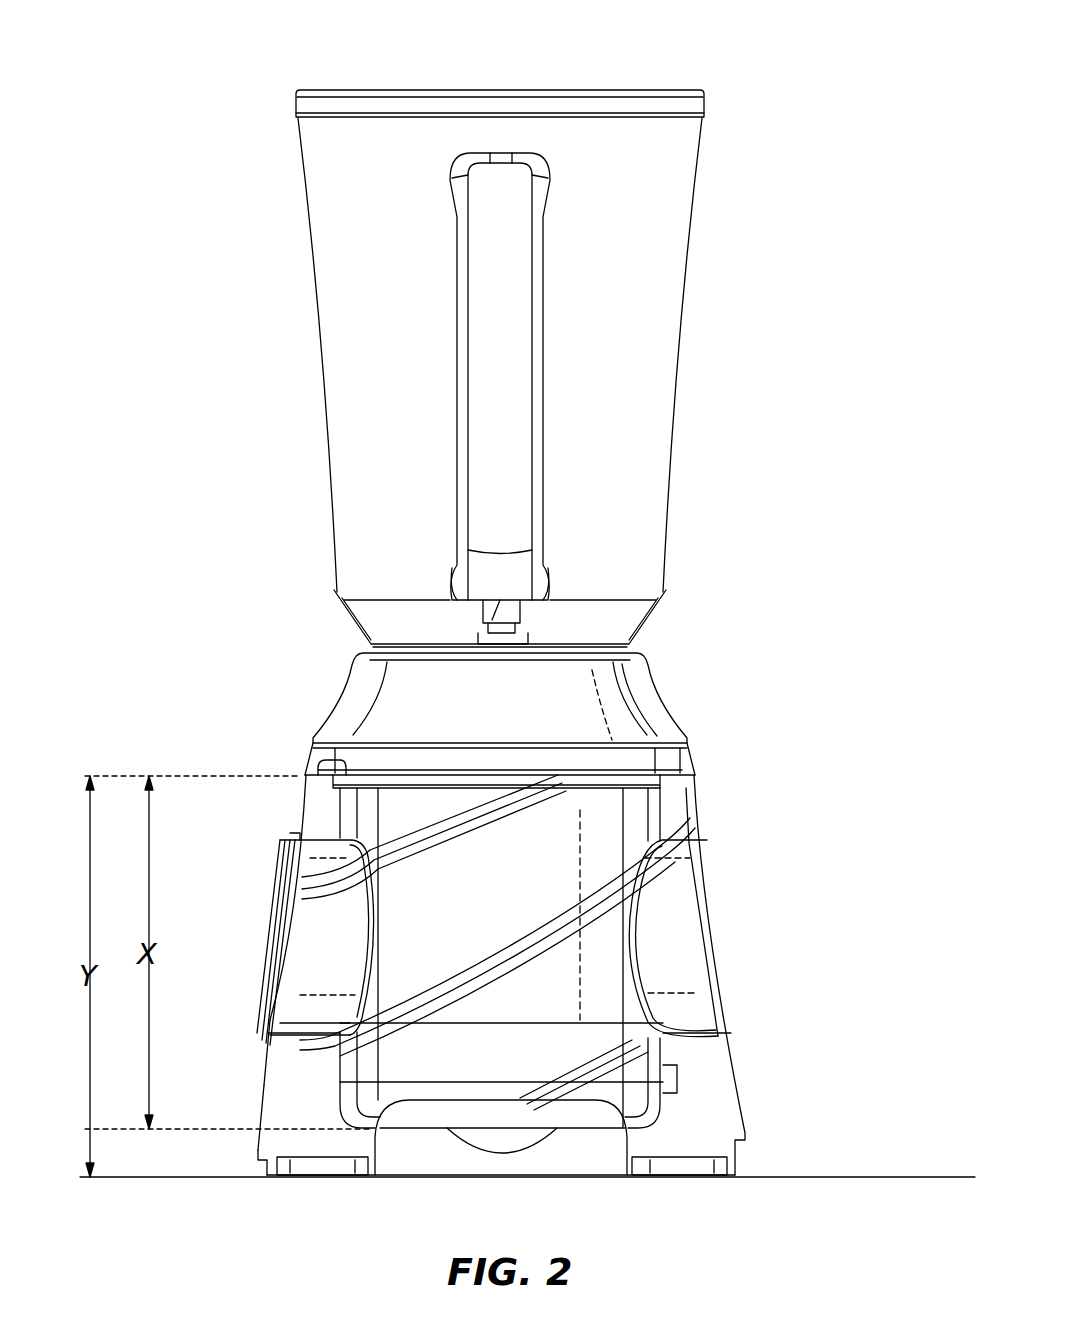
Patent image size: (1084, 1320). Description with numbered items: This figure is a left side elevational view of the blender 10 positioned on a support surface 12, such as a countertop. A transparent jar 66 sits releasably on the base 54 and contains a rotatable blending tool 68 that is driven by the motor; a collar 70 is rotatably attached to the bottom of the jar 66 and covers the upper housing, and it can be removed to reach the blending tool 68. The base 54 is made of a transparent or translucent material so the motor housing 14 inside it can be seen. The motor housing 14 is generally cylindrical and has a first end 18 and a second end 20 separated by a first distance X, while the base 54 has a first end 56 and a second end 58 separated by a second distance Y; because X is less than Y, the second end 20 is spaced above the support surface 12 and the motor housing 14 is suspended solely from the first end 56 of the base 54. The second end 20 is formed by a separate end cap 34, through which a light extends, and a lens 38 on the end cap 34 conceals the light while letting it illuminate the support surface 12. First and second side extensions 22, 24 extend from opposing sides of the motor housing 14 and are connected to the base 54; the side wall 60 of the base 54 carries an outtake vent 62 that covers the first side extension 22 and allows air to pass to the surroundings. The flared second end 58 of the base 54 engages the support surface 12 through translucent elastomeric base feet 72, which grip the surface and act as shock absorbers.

The blender 10 is at (326, 44).
The jar 66 is at (322, 249).
The blending tool 68 is at (482, 640).
The collar 70 is at (363, 705).
The first end of the base 56 is at (318, 769).
The first end of the motor housing 18 is at (658, 783).
The motor housing 14 is at (657, 831).
The first side extension 22 is at (684, 931).
The outtake vent 62 is at (714, 951).
The second side extension 24 is at (306, 954).
The side wall 60 is at (266, 1075).
The base 54 is at (272, 1115).
The second end of the base 58 is at (278, 1147).
The second end of the motor housing 20 is at (503, 1080).
The end cap 34 is at (640, 1113).
The support surface 12 is at (843, 1176).
The base feet 72 is at (320, 1168).
The lens 38 is at (498, 1146).